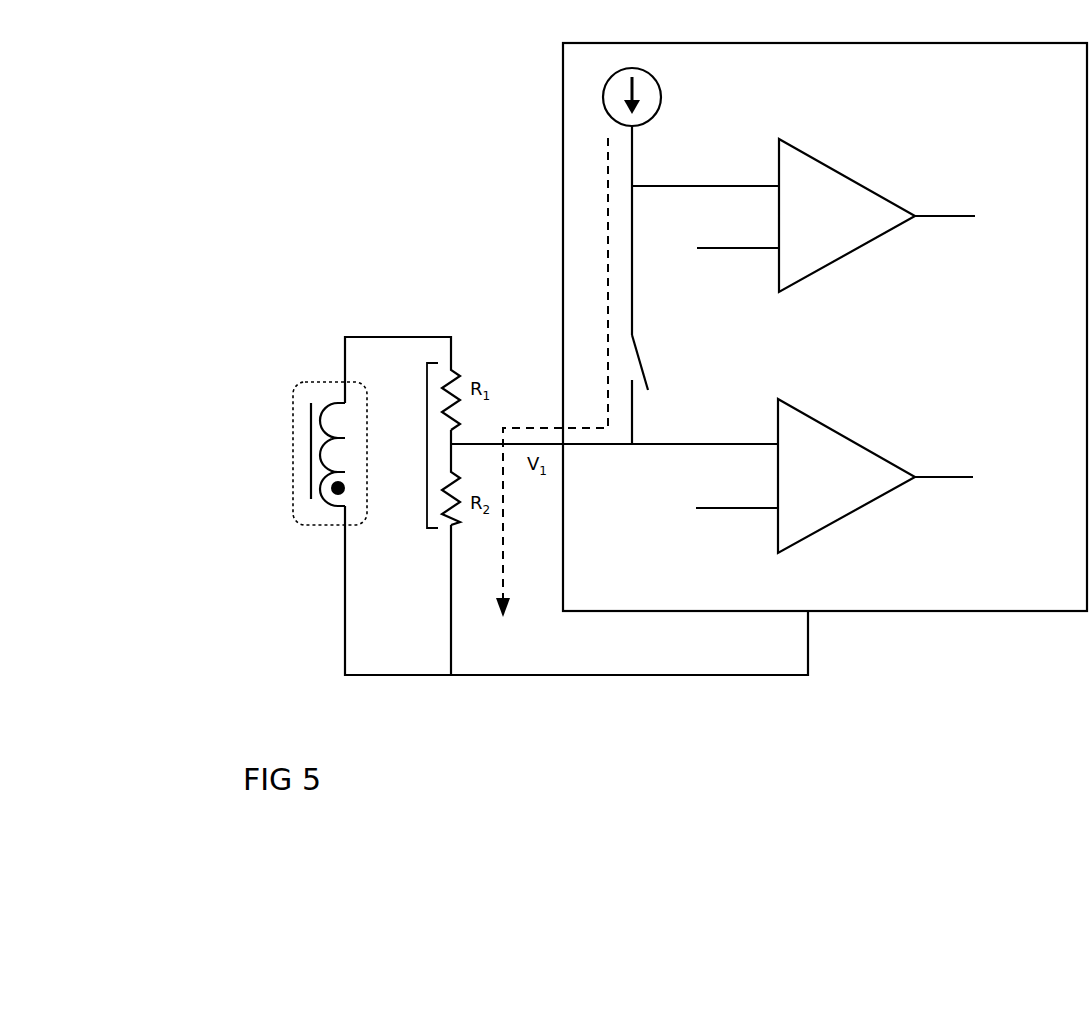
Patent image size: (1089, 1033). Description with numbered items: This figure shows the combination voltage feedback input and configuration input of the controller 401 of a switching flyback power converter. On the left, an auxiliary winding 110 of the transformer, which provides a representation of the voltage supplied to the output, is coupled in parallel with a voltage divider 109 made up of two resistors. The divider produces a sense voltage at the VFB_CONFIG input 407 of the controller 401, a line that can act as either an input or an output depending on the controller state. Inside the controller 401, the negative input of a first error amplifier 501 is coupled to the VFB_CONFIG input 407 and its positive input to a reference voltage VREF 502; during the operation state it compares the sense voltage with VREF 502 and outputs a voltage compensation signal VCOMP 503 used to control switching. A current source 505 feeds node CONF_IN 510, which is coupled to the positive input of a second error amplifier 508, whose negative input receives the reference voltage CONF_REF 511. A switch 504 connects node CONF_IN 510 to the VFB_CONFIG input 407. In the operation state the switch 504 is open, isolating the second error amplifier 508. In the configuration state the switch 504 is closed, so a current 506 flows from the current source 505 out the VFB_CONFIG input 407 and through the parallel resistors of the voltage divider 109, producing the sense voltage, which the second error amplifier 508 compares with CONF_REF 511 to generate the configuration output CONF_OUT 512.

The auxiliary winding 110 is at (307, 453).
The voltage divider 109 is at (427, 449).
The controller 401 is at (825, 327).
The VFB_CONFIG input 407 is at (614, 463).
The first error amplifier 501 is at (846, 476).
The reference voltage VREF 502 is at (734, 525).
The voltage compensation signal VCOMP 503 is at (951, 461).
The switch 504 is at (664, 389).
The current source 505 is at (653, 201).
The current 506 is at (552, 377).
The second error amplifier 508 is at (847, 215).
The node CONF_IN 510 is at (705, 172).
The reference voltage CONF_REF 511 is at (718, 265).
The configuration output CONF_OUT 512 is at (968, 202).